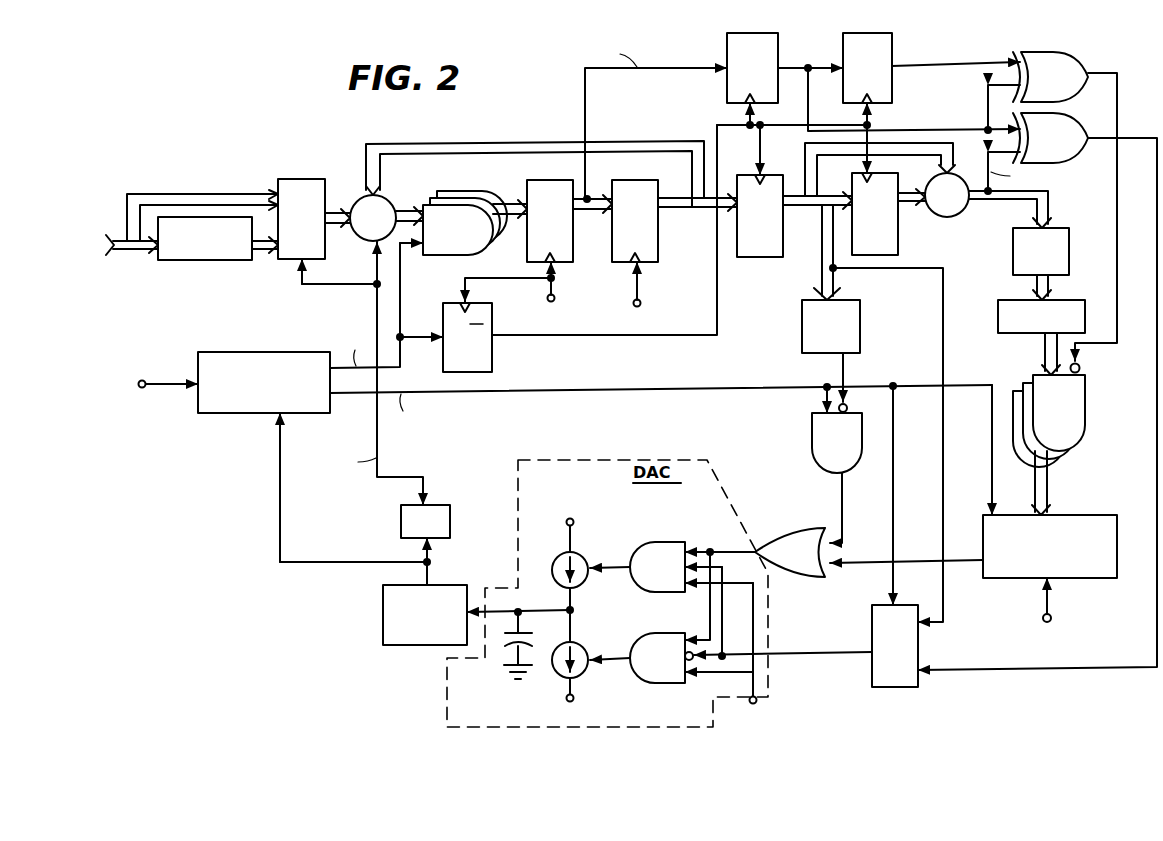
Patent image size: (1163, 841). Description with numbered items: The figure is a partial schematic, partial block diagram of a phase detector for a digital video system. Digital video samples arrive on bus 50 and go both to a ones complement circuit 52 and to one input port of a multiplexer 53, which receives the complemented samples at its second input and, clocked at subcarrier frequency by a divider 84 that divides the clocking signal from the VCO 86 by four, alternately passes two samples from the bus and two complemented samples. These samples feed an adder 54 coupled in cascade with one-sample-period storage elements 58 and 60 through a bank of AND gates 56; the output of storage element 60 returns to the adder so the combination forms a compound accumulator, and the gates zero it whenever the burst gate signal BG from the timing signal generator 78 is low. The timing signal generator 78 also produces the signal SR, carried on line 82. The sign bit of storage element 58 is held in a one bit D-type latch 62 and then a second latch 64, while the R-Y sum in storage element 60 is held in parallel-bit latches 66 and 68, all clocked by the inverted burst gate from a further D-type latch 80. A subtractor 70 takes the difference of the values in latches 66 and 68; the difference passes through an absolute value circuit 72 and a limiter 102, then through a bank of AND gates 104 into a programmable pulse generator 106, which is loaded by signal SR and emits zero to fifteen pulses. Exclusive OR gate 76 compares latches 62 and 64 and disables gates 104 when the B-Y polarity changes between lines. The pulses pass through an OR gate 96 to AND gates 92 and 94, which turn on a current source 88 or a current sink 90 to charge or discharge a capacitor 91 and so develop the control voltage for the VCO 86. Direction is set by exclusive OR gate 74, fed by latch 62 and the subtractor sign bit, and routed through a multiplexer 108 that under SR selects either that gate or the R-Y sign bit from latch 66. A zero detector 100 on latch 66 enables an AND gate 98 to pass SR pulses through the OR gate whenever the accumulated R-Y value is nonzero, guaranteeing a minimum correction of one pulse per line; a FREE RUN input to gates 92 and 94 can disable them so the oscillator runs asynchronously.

The bus 50 is at (131, 251).
The ones complement circuit 52 is at (203, 261).
The multiplexer 53 is at (305, 178).
The adder 54 is at (386, 198).
The bank of AND gates 56 is at (460, 194).
The storage element 58 is at (572, 178).
The storage element 60 is at (628, 179).
The one bit D-type latch 62 is at (727, 88).
The second one bit D-type latch 64 is at (892, 88).
The parallel-bit D-type latch 66 is at (760, 258).
The second parallel-bit D-type latch 68 is at (898, 243).
The subtractor 70 is at (962, 212).
The absolute value circuit 72 is at (1066, 228).
The exclusive OR gate 74 is at (1077, 122).
The exclusive OR gate 76 is at (1078, 59).
The timing signal generator 78 is at (257, 352).
The D-type latch 80 is at (493, 358).
The timing signal line 82 is at (523, 393).
The divider 84 is at (451, 515).
The VCO 86 is at (383, 615).
The current source 88 is at (586, 556).
The current sink 90 is at (586, 646).
The capacitor 91 is at (503, 650).
The AND gate 92 is at (662, 541).
The AND gate 94 is at (662, 632).
The OR gate 96 is at (788, 528).
The AND gate 98 is at (812, 433).
The zero detector 100 is at (861, 340).
The limiter 102 is at (1000, 334).
The bank of AND gates 104 is at (1086, 405).
The programmable pulse generator 106 is at (1083, 515).
The multiplexer 108 is at (896, 687).